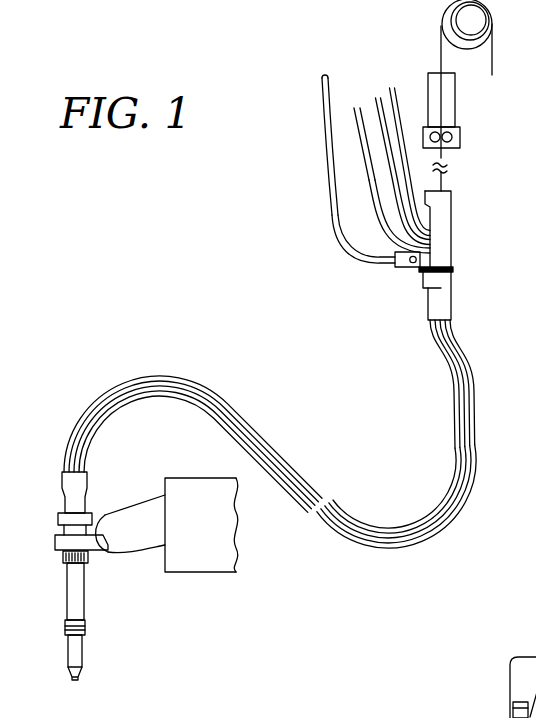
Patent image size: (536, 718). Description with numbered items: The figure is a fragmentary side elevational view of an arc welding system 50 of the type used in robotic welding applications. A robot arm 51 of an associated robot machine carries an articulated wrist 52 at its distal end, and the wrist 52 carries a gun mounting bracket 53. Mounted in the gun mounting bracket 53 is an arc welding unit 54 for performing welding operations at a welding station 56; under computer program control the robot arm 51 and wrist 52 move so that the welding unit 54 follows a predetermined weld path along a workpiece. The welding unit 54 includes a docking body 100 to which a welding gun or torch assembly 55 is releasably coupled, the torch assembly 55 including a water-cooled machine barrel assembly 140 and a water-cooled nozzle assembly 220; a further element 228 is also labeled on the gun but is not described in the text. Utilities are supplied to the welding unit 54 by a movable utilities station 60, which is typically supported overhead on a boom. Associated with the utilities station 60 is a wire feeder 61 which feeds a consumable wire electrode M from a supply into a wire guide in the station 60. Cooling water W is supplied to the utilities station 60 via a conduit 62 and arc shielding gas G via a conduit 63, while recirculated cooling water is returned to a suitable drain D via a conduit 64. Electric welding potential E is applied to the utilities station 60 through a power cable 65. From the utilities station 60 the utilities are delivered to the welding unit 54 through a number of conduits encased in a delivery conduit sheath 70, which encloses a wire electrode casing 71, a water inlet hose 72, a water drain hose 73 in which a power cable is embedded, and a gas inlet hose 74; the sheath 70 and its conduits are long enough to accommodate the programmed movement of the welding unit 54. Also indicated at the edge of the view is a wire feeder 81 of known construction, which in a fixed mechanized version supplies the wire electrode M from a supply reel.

The consumable wire electrode M is at (493, 14).
The electric welding potential E is at (322, 78).
The drain D is at (357, 108).
The arc shielding gas G is at (378, 98).
The cooling water W is at (392, 88).
The arc welding system 50 is at (315, 163).
The robot arm 51 is at (215, 573).
The articulated wrist 52 is at (140, 553).
The gun mounting bracket 53 is at (56, 541).
The arc welding unit 54 is at (50, 497).
The welding gun or torch assembly 55 is at (64, 606).
The welding station 56 is at (88, 710).
The utilities station 60 is at (466, 232).
The wire feeder 61 is at (462, 108).
The conduit 62 is at (399, 131).
The conduit 63 is at (400, 191).
The conduit 64 is at (379, 211).
The power cable 65 is at (333, 214).
The delivery conduit sheath 70 is at (90, 485).
The wire electrode casing 71 is at (475, 383).
The water inlet hose 72 is at (471, 490).
The water drain hose 73 is at (376, 531).
The gas inlet hose 74 is at (440, 498).
The wire feeder 81 is at (499, 708).
The docking body 100 is at (60, 530).
The water-cooled machine barrel assembly 140 is at (91, 602).
The water-cooled nozzle assembly 220 is at (68, 656).
The knurled ring 228 is at (62, 563).